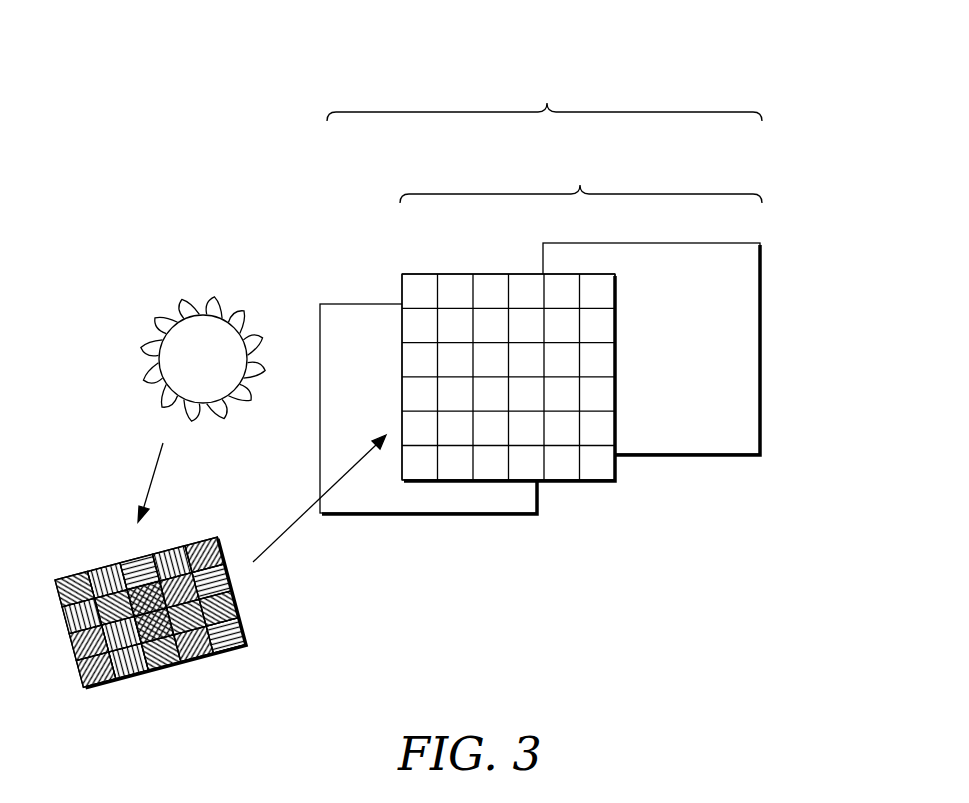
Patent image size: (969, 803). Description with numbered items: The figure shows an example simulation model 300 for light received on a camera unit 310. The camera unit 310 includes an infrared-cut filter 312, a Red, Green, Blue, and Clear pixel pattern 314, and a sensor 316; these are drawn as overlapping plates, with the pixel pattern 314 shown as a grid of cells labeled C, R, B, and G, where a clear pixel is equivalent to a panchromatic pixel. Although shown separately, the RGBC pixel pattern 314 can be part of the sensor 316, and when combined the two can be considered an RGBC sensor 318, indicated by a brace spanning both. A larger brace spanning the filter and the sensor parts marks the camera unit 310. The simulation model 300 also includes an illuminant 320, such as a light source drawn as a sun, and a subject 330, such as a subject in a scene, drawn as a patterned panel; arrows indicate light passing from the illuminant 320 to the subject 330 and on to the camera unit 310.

The simulation model 300 is at (787, 62).
The camera unit 310 is at (544, 99).
The infrared-cut filter 312 is at (335, 303).
The RGBC pixel pattern 314 is at (418, 273).
The sensor 316 is at (745, 243).
The RGBC sensor 318 is at (581, 182).
The illuminant 320 is at (190, 310).
The subject 330 is at (93, 570).